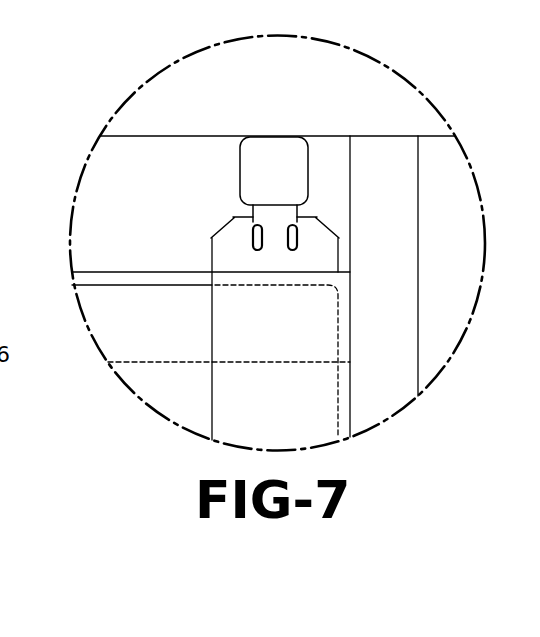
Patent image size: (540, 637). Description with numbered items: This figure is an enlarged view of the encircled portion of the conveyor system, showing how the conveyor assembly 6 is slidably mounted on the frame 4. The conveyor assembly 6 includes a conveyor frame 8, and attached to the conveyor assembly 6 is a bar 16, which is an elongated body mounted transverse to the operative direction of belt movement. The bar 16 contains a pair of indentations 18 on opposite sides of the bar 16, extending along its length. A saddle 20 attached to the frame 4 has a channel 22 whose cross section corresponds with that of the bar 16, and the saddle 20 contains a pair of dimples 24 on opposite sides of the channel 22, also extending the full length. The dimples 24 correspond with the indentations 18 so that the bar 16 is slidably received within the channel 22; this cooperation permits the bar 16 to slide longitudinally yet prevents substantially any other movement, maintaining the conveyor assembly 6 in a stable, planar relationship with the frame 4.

The frame 4 is at (437, 200).
The conveyor assembly 6 is at (198, 36).
The conveyor frame 8 is at (193, 108).
The bar 16 is at (276, 206).
The indentations 18 is at (253, 230).
The saddle 20 is at (230, 276).
The channel 22 is at (270, 254).
The dimples 24 is at (253, 250).